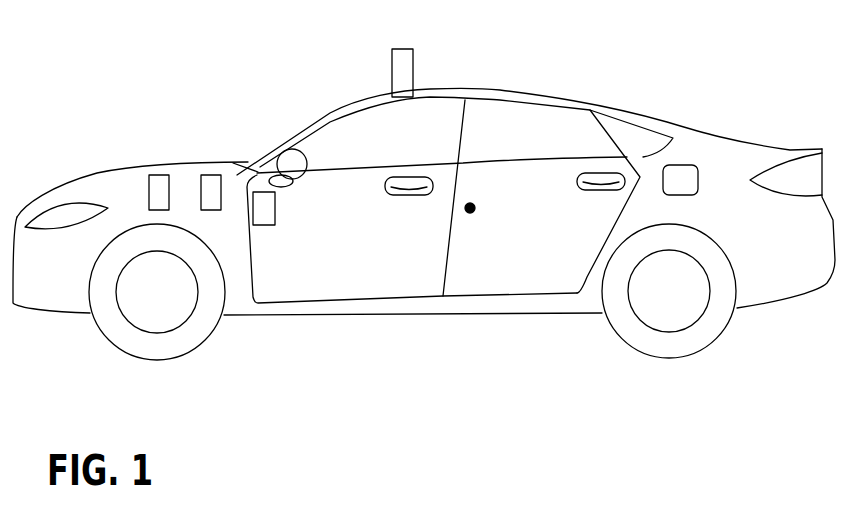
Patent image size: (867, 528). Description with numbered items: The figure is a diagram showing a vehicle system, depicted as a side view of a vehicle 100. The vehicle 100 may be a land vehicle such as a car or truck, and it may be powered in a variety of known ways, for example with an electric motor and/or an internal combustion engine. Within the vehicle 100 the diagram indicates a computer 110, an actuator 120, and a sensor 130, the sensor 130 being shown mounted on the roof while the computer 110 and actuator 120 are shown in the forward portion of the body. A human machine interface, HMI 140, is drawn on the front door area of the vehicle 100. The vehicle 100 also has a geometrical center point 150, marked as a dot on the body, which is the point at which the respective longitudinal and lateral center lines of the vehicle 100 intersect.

The vehicle 100 is at (487, 88).
The computer 110 is at (213, 171).
The actuator 120 is at (153, 170).
The sensor 130 is at (400, 48).
The human machine interface 140 is at (257, 171).
The geometrical center point 150 is at (468, 218).